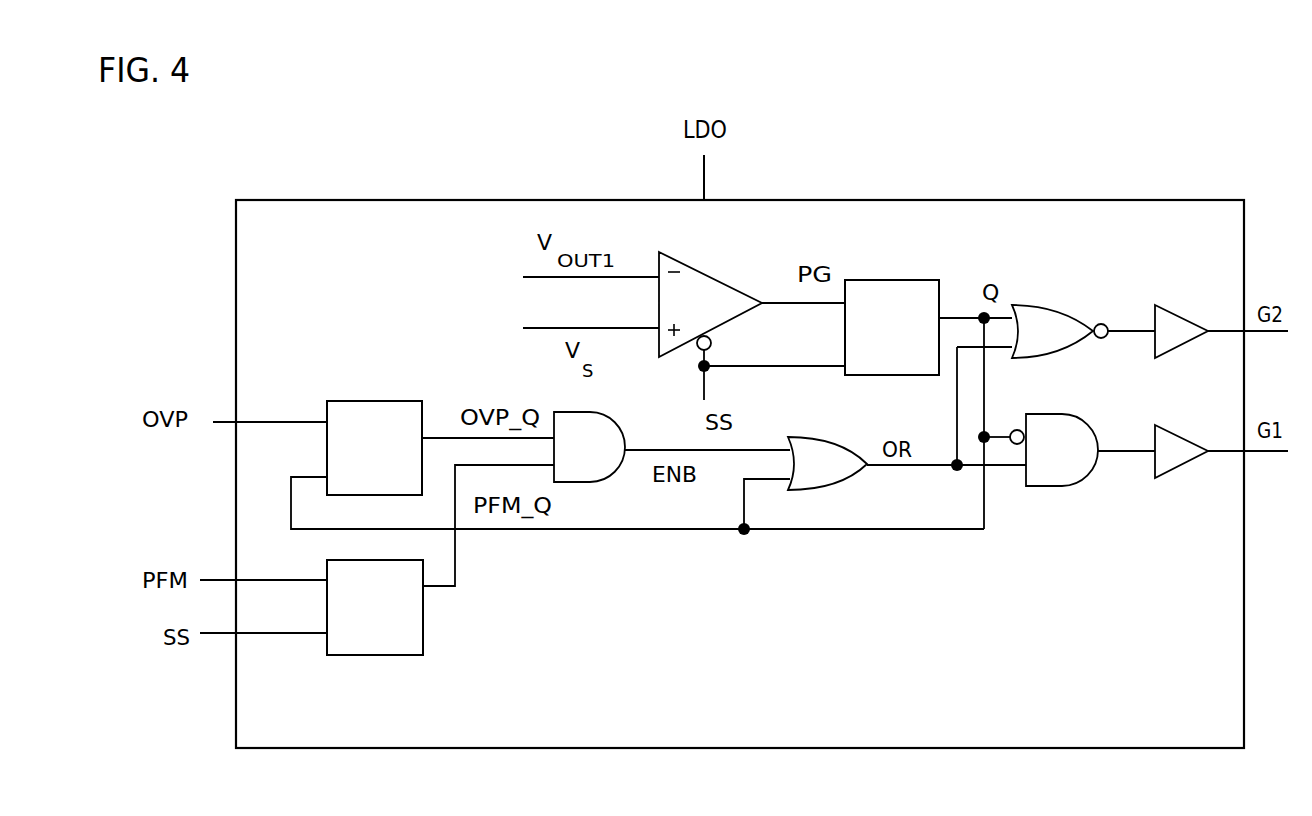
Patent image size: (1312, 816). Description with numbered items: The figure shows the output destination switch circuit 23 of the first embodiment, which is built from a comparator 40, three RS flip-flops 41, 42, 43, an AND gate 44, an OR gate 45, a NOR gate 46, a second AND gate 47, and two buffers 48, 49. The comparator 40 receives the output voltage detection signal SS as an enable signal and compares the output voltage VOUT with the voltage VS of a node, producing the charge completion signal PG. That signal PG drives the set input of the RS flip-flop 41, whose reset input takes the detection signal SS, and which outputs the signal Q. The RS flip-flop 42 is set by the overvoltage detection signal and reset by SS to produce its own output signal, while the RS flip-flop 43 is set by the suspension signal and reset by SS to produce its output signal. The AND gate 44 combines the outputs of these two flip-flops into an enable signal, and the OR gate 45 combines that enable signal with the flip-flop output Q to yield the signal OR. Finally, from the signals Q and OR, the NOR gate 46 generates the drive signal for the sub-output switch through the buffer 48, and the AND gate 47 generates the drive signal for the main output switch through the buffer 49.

The output destination switch circuit 23 is at (383, 198).
The comparator 40 is at (745, 294).
The RS flip-flop 41 is at (898, 280).
The RS flip-flop 42 is at (360, 398).
The RS flip-flop 43 is at (377, 655).
The AND gate 44 is at (598, 482).
The OR gate 45 is at (832, 493).
The NOR gate 46 is at (1050, 305).
The AND gate 47 is at (1068, 486).
The buffer 48 is at (1185, 316).
The buffer 49 is at (1192, 462).